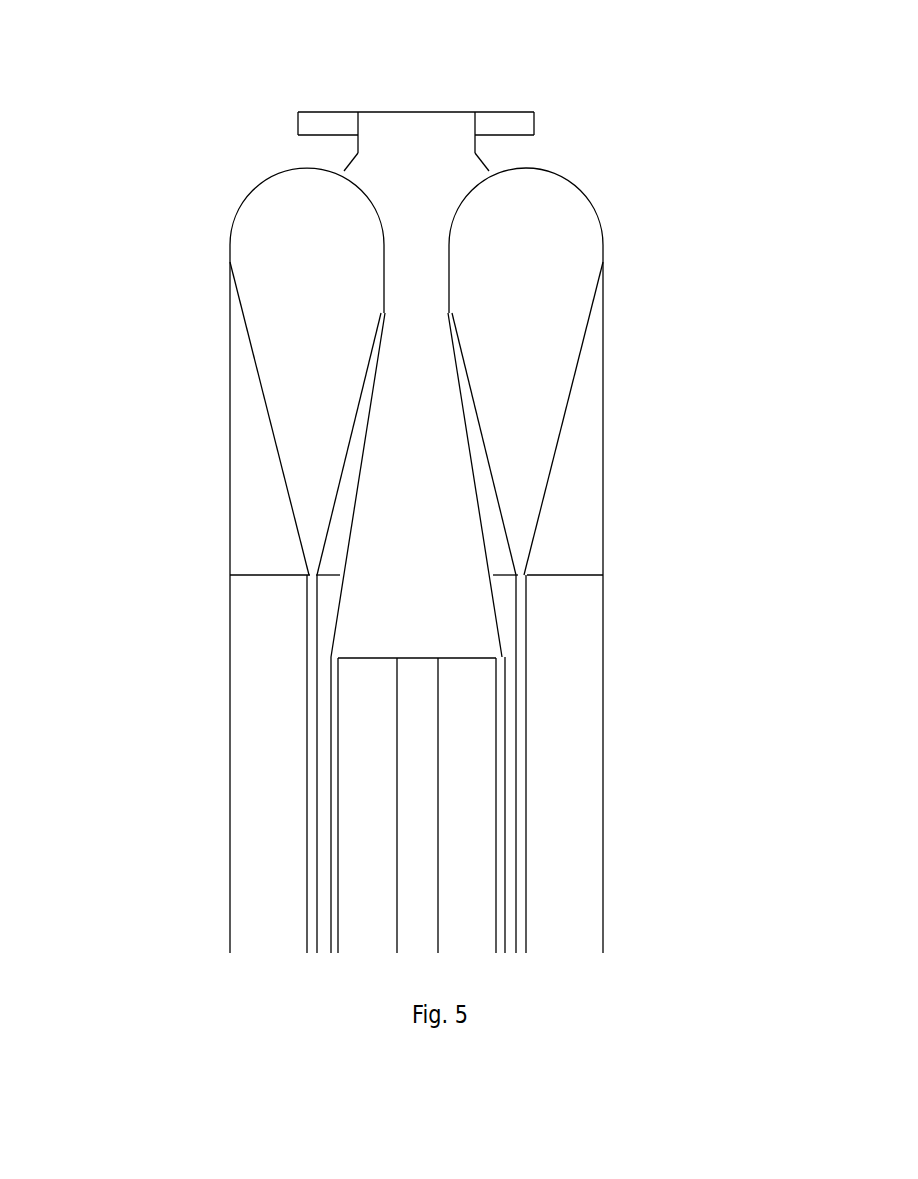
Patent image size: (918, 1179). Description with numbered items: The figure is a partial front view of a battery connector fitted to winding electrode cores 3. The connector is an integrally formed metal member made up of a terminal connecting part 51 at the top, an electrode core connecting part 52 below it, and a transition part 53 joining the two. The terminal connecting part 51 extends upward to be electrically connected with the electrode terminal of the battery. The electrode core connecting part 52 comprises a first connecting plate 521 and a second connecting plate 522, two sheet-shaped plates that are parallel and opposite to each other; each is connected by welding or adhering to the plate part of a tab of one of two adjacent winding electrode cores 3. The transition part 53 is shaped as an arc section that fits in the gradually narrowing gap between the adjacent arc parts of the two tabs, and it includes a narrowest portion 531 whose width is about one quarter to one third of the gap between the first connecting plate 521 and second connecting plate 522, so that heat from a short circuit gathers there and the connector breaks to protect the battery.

The winding electrode core 3 is at (208, 555).
The terminal connecting part 51 is at (330, 118).
The electrode core connecting part 52 is at (280, 805).
The first connecting plate 521 is at (335, 815).
The second connecting plate 522 is at (500, 911).
The transition part 53 is at (408, 492).
The narrowest portion 531 is at (422, 273).